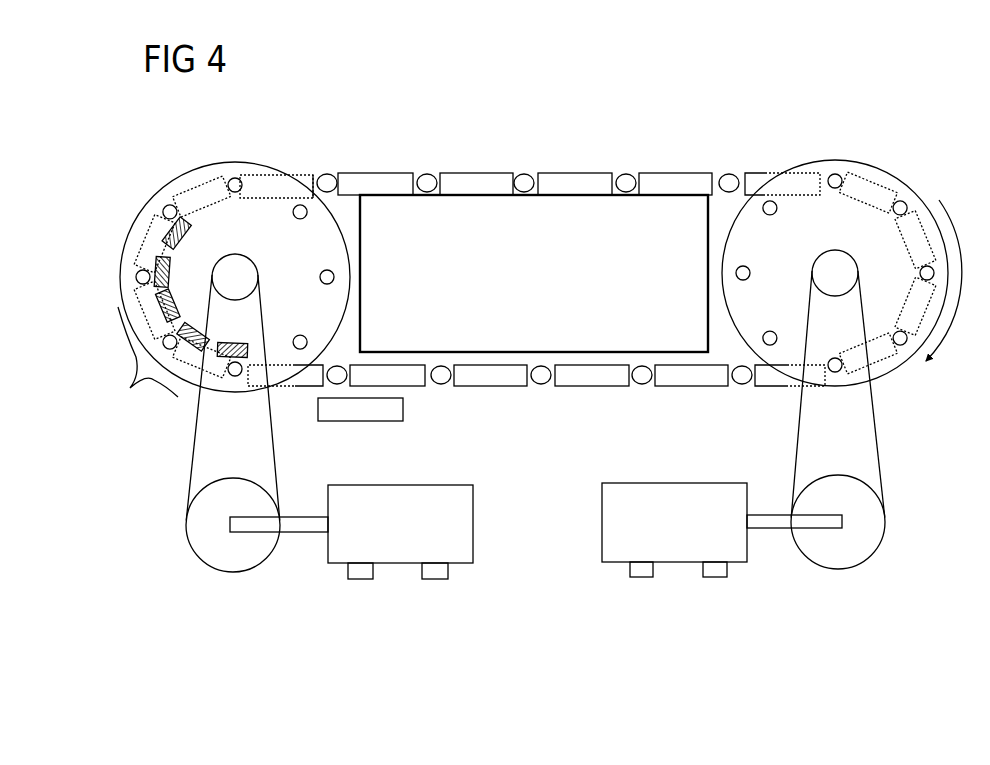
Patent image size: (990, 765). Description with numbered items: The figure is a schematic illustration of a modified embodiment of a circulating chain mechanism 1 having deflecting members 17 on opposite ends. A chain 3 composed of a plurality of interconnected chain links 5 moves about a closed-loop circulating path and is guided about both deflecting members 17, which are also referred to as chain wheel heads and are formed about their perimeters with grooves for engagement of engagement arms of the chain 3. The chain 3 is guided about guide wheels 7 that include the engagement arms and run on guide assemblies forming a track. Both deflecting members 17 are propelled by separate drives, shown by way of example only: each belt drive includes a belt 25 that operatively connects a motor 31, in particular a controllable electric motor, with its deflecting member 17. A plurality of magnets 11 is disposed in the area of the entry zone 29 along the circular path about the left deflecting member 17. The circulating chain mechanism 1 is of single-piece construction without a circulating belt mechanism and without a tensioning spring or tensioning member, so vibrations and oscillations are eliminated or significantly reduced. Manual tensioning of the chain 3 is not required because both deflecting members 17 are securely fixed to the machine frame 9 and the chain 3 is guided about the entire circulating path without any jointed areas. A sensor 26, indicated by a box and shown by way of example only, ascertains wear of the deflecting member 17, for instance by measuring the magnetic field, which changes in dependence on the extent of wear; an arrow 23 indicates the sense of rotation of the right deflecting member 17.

The circulating chain mechanism 1 is at (345, 118).
The chain 3 is at (555, 163).
The chain links 5 is at (673, 177).
The guide wheels 7 is at (622, 175).
The machine frame 9 is at (515, 322).
The magnets 11 is at (167, 237).
The deflecting member 17 is at (263, 222).
The direction of rotation 23 is at (952, 330).
The belt 25 is at (273, 433).
The sensor 26 is at (404, 409).
The entry zone 29 is at (145, 369).
The motor 31 is at (397, 545).